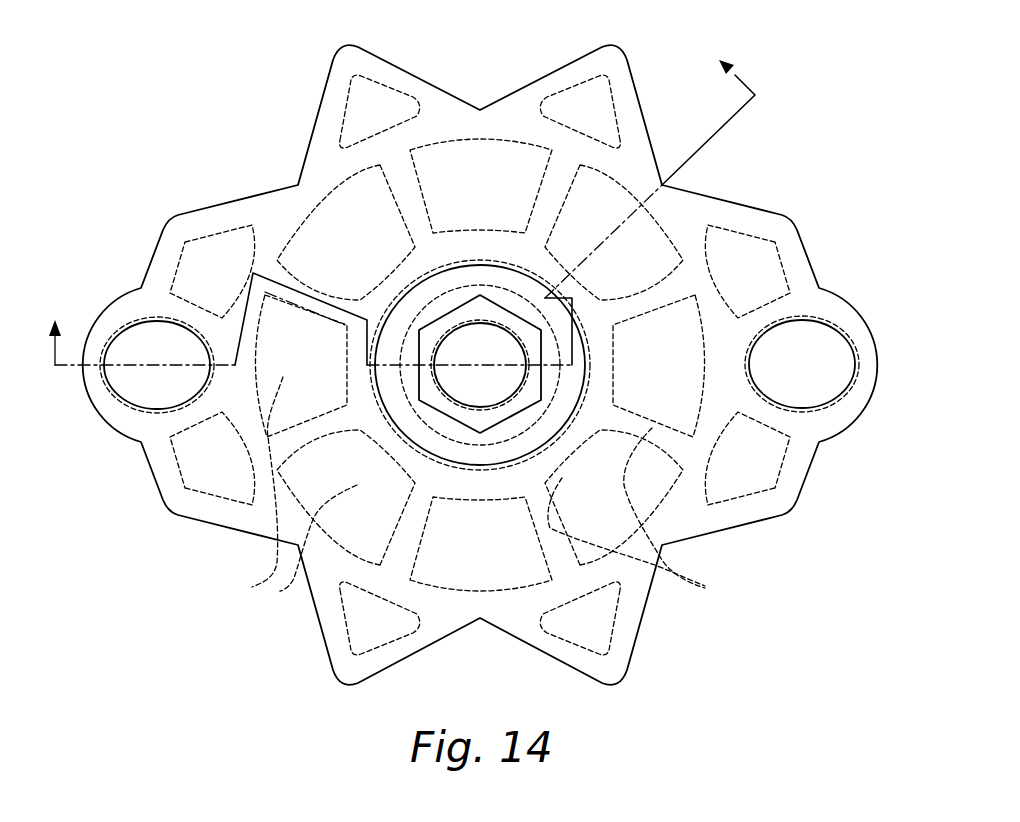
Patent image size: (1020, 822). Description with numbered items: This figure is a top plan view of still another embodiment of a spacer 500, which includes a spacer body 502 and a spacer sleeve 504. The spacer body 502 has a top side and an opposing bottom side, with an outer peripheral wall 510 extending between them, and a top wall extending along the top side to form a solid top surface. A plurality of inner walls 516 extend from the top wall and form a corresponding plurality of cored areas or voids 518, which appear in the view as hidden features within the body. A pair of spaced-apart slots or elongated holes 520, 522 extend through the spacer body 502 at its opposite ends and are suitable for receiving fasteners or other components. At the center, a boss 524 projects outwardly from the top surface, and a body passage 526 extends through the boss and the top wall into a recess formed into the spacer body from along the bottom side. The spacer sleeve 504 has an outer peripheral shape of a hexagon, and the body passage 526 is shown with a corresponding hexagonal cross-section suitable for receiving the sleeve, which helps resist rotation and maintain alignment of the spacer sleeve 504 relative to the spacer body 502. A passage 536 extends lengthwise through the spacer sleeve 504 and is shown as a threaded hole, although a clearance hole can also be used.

The spacer 500 is at (178, 104).
The spacer body 502 is at (128, 472).
The spacer sleeve 504 is at (450, 285).
The outer peripheral wall 510 is at (725, 202).
The inner walls 516 is at (706, 585).
The cored areas or voids 518 is at (278, 488).
The slot or elongated hole 520 is at (150, 388).
The slot or elongated hole 522 is at (812, 382).
The boss 524 is at (407, 308).
The body passage 526 is at (511, 312).
The passage 536 is at (482, 390).